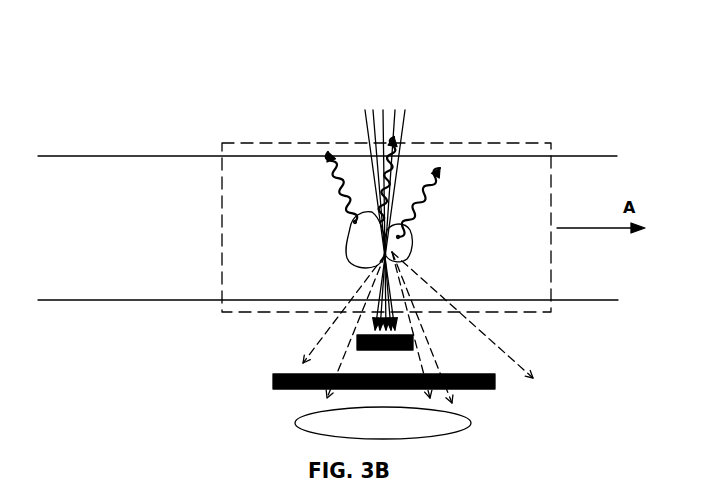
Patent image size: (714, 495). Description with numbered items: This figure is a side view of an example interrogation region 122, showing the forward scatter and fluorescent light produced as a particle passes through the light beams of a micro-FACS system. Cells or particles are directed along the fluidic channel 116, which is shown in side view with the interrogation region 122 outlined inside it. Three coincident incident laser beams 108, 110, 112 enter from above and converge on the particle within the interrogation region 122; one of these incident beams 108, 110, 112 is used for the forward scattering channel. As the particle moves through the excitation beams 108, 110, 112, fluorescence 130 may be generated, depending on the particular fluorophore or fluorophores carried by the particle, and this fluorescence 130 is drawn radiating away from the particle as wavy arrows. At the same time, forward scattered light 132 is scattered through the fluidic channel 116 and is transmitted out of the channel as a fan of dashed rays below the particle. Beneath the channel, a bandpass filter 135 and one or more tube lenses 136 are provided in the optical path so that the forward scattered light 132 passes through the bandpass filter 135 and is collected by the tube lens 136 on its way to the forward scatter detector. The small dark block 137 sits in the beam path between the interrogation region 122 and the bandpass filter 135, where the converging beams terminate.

The incident laser beam 108 is at (385, 102).
The incident laser beam 110 is at (407, 174).
The incident laser beam 112 is at (420, 174).
The fluidic channel 116 is at (193, 156).
The interrogation region 122 is at (242, 143).
The fluorescence 130 is at (445, 182).
The forward scattered light 132 is at (307, 338).
The bandpass filter 135 is at (292, 389).
The tube lens 136 is at (482, 431).
The beam block 137 is at (413, 343).